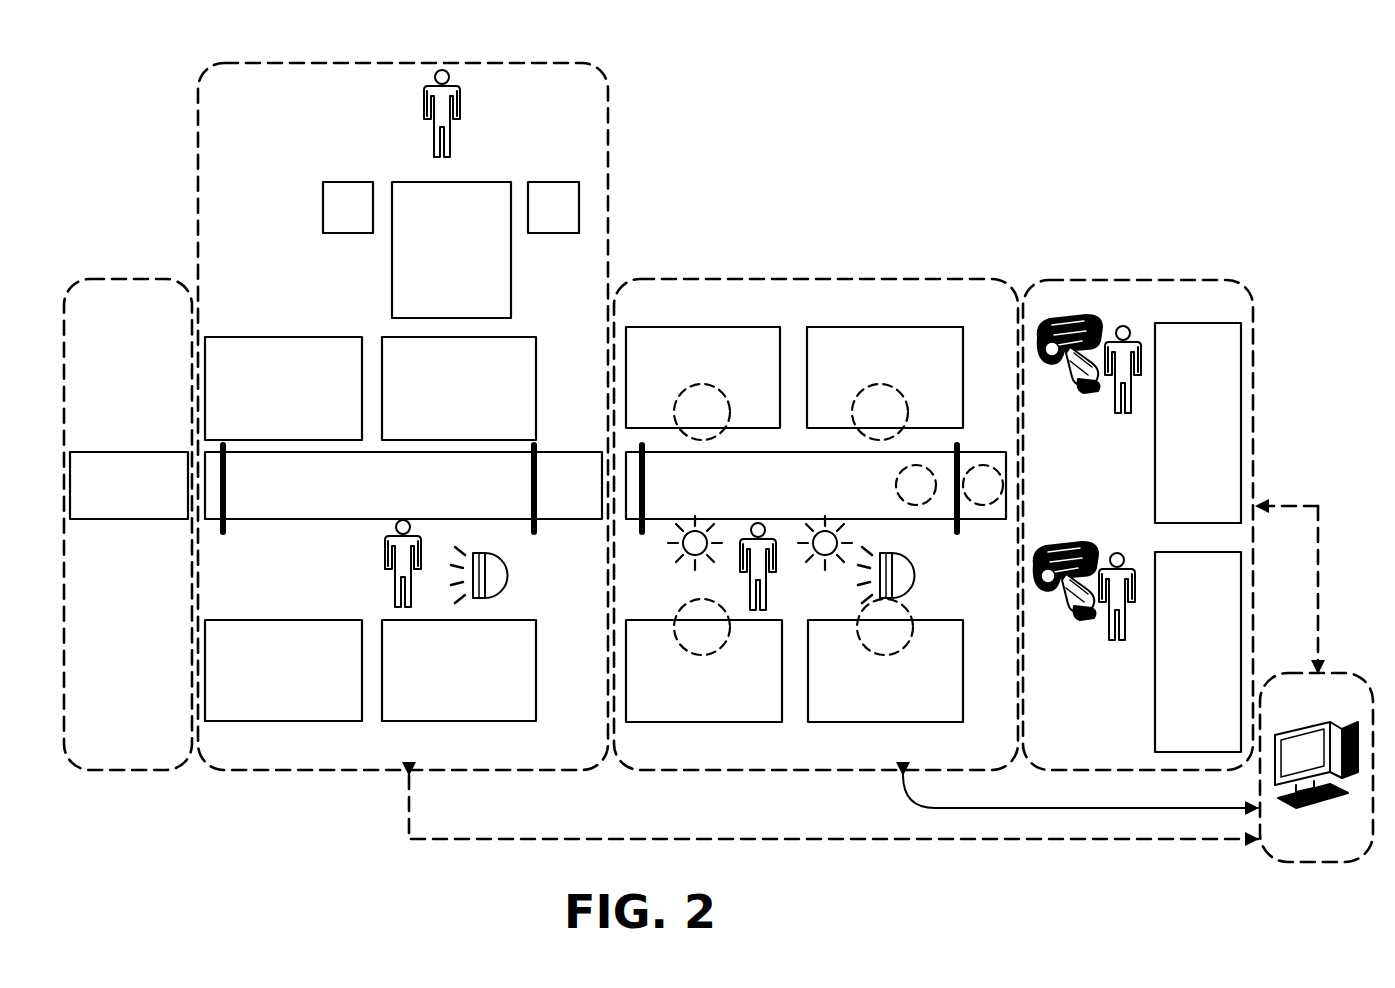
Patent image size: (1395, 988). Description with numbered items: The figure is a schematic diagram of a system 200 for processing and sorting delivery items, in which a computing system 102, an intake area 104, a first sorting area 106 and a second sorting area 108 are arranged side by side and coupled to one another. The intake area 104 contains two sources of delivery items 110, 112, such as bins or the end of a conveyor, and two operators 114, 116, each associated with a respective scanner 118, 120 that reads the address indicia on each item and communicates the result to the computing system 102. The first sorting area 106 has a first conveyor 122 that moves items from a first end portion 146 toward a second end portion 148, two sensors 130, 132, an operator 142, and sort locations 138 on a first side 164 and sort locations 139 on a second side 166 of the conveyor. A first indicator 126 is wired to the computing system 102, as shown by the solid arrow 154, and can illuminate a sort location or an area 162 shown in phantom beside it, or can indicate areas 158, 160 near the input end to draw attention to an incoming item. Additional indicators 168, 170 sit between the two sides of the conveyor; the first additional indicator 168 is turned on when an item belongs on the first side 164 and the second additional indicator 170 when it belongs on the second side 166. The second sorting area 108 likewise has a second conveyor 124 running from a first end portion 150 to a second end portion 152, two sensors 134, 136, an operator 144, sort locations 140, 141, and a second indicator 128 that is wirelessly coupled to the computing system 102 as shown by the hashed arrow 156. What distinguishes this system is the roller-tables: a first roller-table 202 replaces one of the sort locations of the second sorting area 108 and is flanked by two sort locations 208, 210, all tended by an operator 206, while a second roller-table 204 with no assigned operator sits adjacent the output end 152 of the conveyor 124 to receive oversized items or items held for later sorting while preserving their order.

The computing system 102 is at (1296, 837).
The intake area 104 is at (1158, 280).
The first sorting area 106 is at (863, 280).
The second sorting area 108 is at (497, 63).
The source of delivery items 110 is at (1179, 426).
The source of delivery items 112 is at (1179, 651).
The operator 114 is at (1120, 322).
The operator 116 is at (1115, 548).
The scanner 118 is at (1062, 318).
The scanner 120 is at (1056, 546).
The first conveyor 122 is at (763, 504).
The second conveyor 124 is at (397, 504).
The first indicator 126 is at (910, 565).
The second indicator 128 is at (508, 568).
The sensor 130 is at (960, 446).
The sensor 132 is at (645, 495).
The sensor 134 is at (537, 498).
The sensor 136 is at (226, 492).
The sort location 138 is at (679, 366).
The sort location 139 is at (679, 698).
The sort location 140 is at (264, 402).
The sort location 141 is at (264, 684).
The operator 142 is at (772, 580).
The operator 144 is at (386, 566).
The first end portion 146 is at (985, 528).
The second end portion 148 is at (630, 528).
The first end portion 150 is at (582, 446).
The second end portion 152 is at (208, 528).
The solid arrow 154 is at (1016, 806).
The hashed arrow 156 is at (755, 838).
The area 158 is at (964, 499).
The area 160 is at (897, 499).
The area 162 is at (683, 426).
The first side 164 is at (787, 312).
The second side 166 is at (756, 762).
The first additional indicator 168 is at (830, 520).
The second additional indicator 170 is at (699, 518).
The system 200 is at (1312, 292).
The first roller-table 202 is at (432, 226).
The second roller-table 204 is at (110, 504).
The operator 206 is at (455, 125).
The sort location 208 is at (330, 221).
The sort location 210 is at (535, 221).